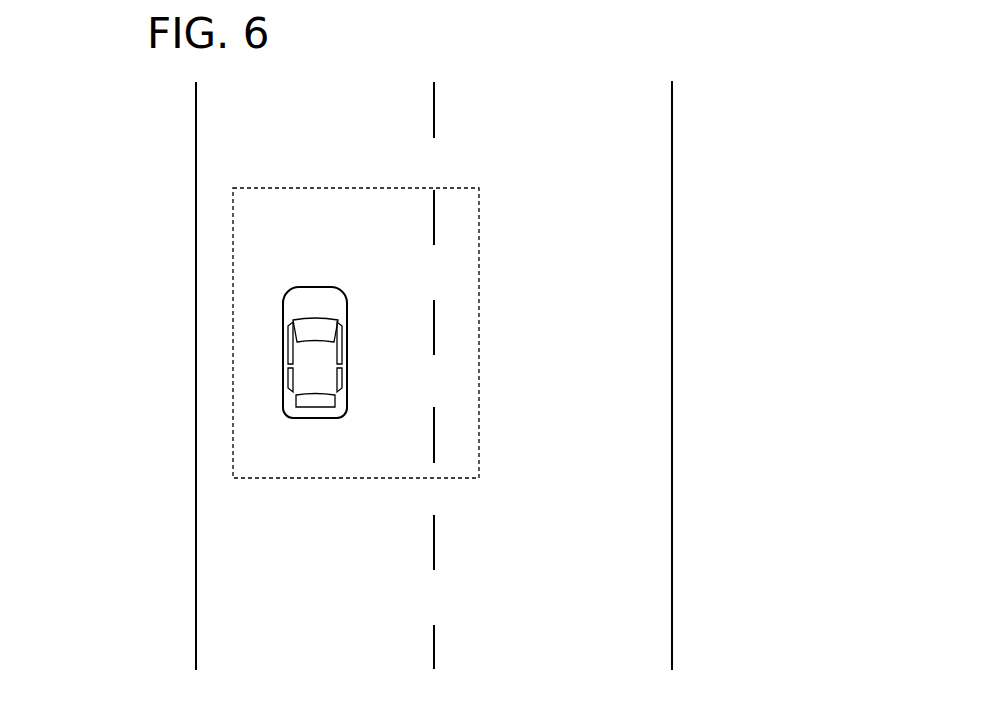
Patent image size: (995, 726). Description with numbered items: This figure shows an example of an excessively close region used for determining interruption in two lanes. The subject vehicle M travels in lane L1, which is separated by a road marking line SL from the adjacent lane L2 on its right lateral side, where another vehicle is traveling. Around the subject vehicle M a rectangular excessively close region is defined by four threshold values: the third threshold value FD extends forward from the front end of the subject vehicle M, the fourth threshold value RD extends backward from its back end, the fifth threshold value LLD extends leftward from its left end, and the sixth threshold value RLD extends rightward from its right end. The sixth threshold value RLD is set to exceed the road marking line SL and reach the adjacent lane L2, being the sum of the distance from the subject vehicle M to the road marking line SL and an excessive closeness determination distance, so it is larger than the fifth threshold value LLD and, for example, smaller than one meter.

The subject vehicle M is at (348, 317).
The road marking line SL is at (436, 543).
The third threshold value FD is at (315, 189).
The fourth threshold value RD is at (315, 418).
The fifth threshold value LLD is at (283, 367).
The sixth threshold value RLD is at (478, 367).
The lane L1 is at (329, 672).
The lane L2 is at (569, 672).